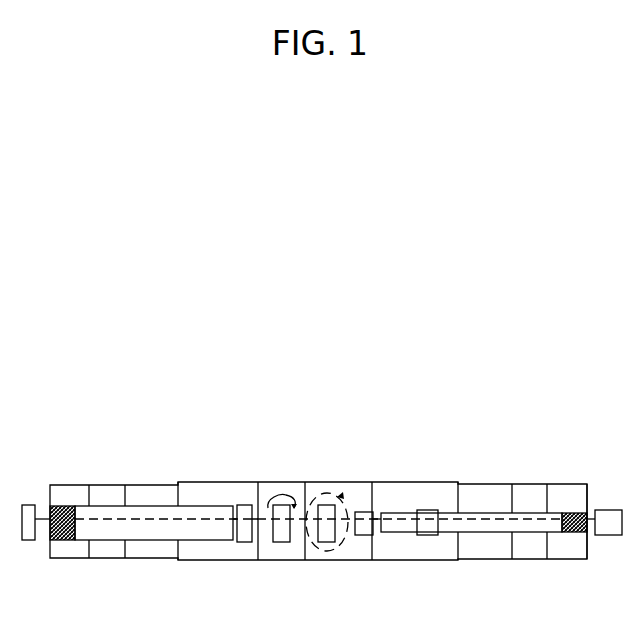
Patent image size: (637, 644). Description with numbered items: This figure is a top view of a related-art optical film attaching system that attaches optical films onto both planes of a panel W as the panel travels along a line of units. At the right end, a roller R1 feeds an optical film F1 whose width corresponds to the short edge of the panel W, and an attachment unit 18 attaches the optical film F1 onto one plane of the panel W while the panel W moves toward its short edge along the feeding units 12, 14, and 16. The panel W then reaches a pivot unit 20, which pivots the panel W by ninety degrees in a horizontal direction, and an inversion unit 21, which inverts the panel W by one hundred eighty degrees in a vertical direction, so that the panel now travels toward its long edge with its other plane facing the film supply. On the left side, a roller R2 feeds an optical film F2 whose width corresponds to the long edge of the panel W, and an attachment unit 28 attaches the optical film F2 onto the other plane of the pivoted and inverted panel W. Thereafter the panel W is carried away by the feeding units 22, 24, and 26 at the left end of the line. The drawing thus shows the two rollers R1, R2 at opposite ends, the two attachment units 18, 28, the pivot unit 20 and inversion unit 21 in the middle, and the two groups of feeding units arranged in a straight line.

The feeding unit 12 is at (560, 560).
The feeding unit 14 is at (530, 560).
The feeding unit 16 is at (483, 560).
The attachment unit 18 is at (412, 561).
The pivot unit 20 is at (335, 561).
The inversion unit 21 is at (280, 561).
The attachment unit 28 is at (220, 561).
The feeding unit 26 is at (150, 560).
The feeding unit 24 is at (105, 560).
The feeding unit 22 is at (70, 560).
The roller R2 is at (63, 503).
The optical film F2 is at (107, 503).
The optical film F1 is at (530, 504).
The roller R1 is at (578, 504).
The panel W is at (28, 541).